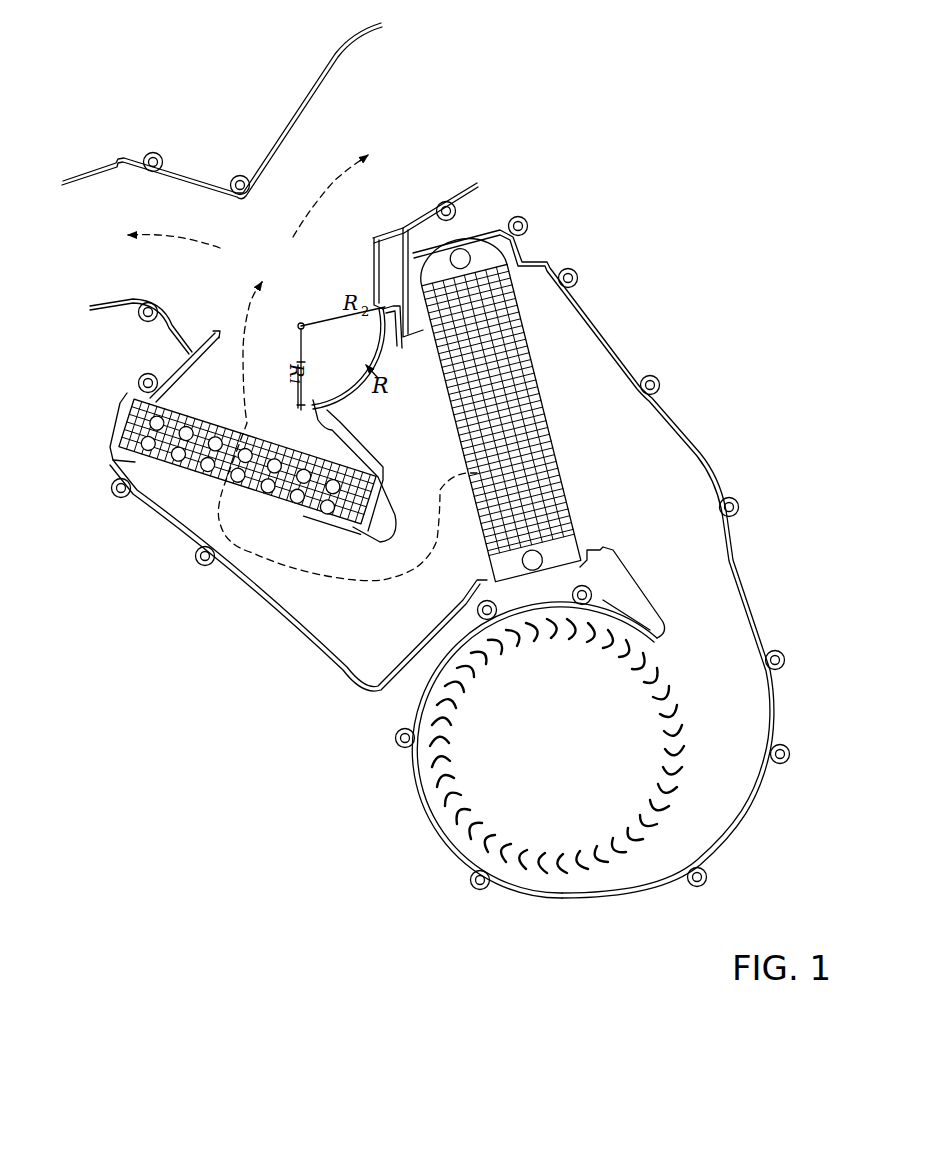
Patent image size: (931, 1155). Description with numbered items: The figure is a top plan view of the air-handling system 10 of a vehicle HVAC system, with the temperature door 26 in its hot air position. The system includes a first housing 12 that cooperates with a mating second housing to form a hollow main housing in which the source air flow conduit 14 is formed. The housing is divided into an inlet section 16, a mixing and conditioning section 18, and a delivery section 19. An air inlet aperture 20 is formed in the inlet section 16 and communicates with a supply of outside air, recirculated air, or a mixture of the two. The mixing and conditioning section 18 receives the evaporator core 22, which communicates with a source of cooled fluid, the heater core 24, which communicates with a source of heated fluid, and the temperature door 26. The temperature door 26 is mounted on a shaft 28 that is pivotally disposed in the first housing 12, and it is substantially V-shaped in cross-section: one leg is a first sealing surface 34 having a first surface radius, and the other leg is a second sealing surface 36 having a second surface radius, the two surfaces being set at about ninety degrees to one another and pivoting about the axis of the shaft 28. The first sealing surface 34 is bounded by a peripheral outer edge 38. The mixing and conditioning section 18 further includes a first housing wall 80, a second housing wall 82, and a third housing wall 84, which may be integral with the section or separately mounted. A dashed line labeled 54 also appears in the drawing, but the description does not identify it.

The air-handling system 10 is at (690, 100).
The first housing 12 is at (280, 605).
The source air flow conduit 14 is at (612, 448).
The inlet section 16 is at (765, 528).
The mixing and conditioning section 18 is at (105, 366).
The delivery section 19 is at (503, 5).
The air inlet aperture 20 is at (569, 757).
The evaporator core 22 is at (482, 537).
The heater core 24 is at (147, 440).
The temperature door 26 is at (297, 355).
The shaft 28 is at (297, 318).
The first sealing surface 34 is at (300, 367).
The second sealing surface 36 is at (346, 313).
The peripheral outer edge 38 is at (370, 355).
The air flow path 54 is at (357, 580).
The first housing wall 80 is at (212, 347).
The second housing wall 82 is at (322, 413).
The third housing wall 84 is at (378, 340).